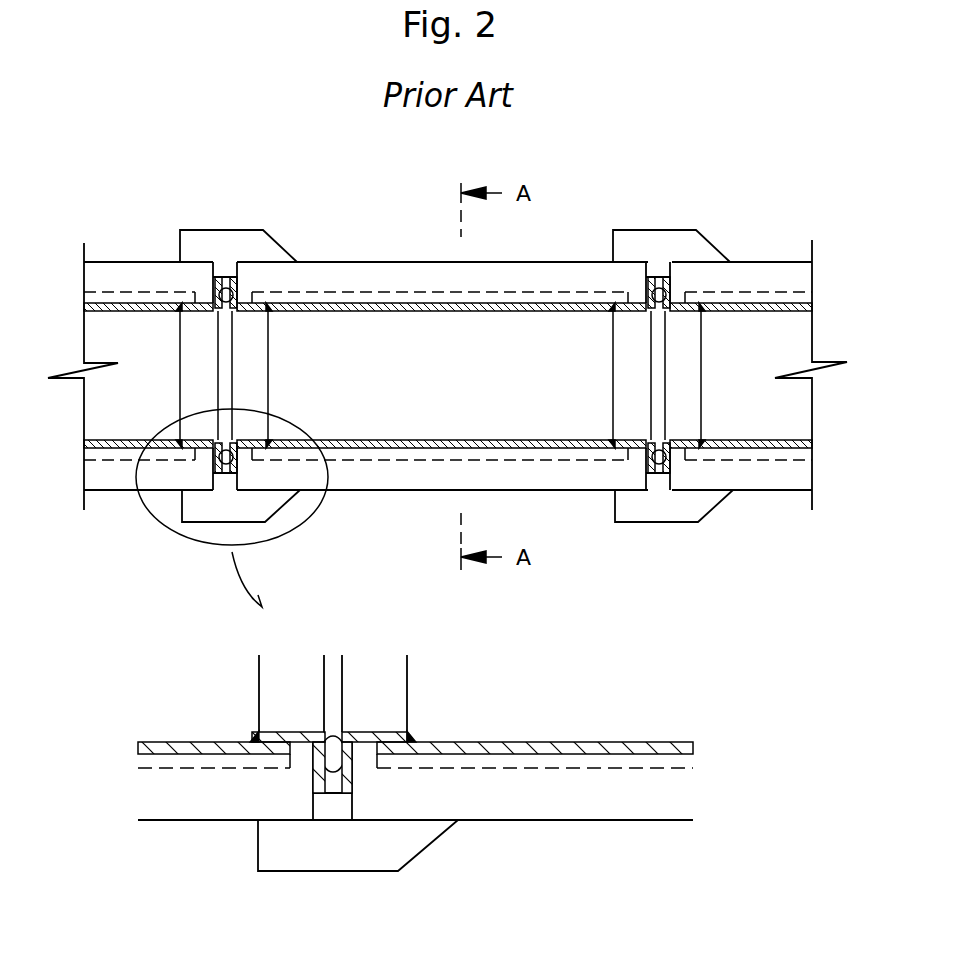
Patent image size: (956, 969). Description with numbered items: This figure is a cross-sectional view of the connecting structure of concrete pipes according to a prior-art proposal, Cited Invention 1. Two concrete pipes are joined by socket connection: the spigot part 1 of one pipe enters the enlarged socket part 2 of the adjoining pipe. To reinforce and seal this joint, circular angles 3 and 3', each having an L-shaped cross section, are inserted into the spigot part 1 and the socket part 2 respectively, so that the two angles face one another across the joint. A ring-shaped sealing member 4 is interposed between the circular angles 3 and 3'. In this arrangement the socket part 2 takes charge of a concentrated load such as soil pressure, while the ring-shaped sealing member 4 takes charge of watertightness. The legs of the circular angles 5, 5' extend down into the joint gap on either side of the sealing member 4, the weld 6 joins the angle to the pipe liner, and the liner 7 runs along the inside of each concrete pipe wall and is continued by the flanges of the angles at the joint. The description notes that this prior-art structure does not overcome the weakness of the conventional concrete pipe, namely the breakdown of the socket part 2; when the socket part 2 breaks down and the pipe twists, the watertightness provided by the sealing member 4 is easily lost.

The spigot part 1 is at (153, 268).
The socket part 2 is at (231, 240).
The circular angle 3 is at (268, 688).
The circular angle 3' is at (399, 688).
The ring-shaped sealing member 4 is at (333, 740).
The flange leg 5 is at (331, 836).
The adjacent flange leg 5' is at (380, 836).
The weld 6 is at (252, 740).
The steel liner 7 is at (342, 300).